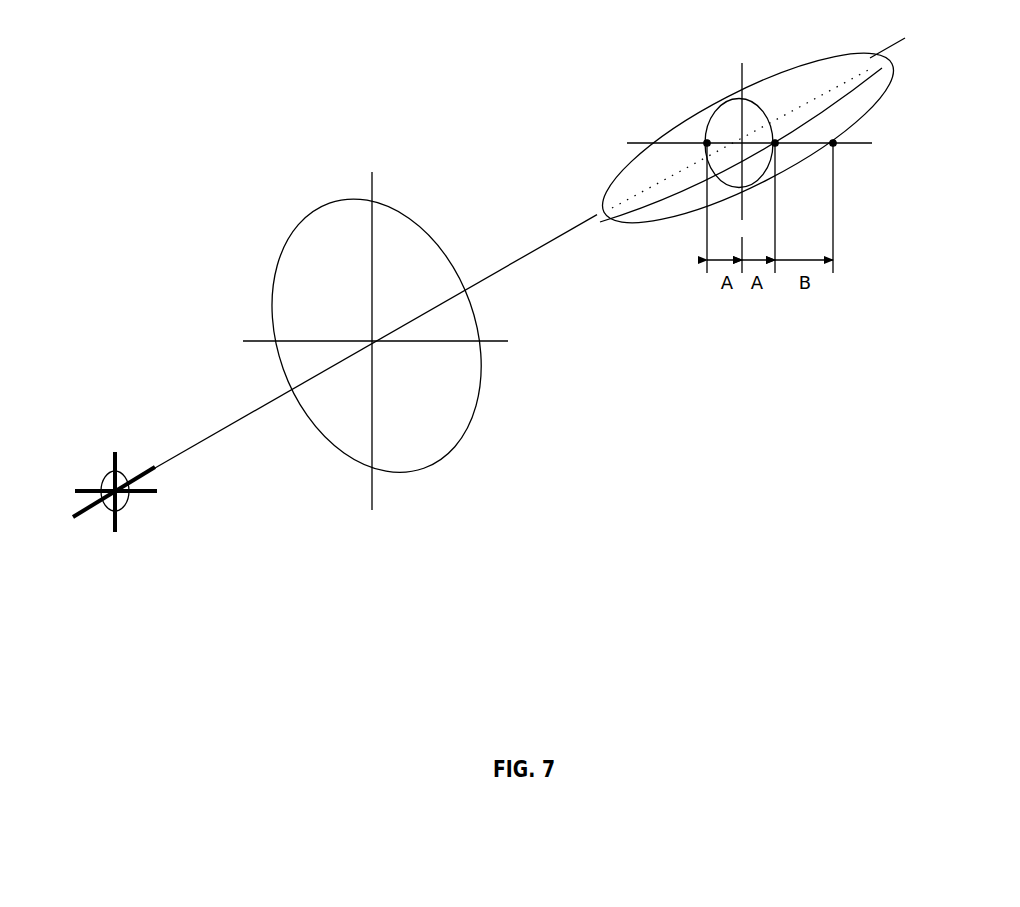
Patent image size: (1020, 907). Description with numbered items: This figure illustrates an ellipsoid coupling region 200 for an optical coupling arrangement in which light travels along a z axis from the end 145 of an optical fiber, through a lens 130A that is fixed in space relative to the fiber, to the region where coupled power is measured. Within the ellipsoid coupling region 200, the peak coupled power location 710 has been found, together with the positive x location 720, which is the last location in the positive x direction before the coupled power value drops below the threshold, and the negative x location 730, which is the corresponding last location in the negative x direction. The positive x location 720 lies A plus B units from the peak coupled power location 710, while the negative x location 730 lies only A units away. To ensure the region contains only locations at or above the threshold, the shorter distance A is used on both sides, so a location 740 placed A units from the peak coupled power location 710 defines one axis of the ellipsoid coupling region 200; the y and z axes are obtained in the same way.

The end of optical fiber 145 is at (102, 473).
The lens 130A is at (327, 193).
The ellipsoid coupling region 200 is at (882, 62).
The peak coupled power location 710 is at (758, 114).
The positive x location 720 is at (836, 146).
The negative x location 730 is at (707, 142).
The location A units from peak 740 is at (776, 146).